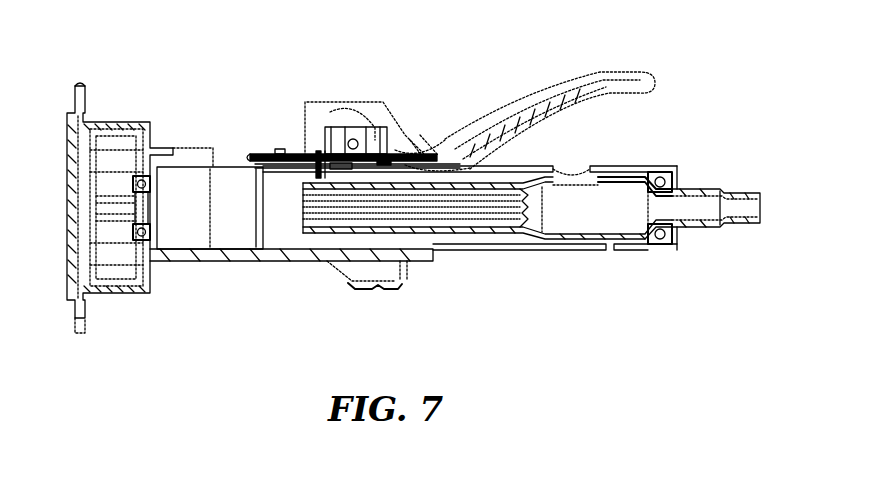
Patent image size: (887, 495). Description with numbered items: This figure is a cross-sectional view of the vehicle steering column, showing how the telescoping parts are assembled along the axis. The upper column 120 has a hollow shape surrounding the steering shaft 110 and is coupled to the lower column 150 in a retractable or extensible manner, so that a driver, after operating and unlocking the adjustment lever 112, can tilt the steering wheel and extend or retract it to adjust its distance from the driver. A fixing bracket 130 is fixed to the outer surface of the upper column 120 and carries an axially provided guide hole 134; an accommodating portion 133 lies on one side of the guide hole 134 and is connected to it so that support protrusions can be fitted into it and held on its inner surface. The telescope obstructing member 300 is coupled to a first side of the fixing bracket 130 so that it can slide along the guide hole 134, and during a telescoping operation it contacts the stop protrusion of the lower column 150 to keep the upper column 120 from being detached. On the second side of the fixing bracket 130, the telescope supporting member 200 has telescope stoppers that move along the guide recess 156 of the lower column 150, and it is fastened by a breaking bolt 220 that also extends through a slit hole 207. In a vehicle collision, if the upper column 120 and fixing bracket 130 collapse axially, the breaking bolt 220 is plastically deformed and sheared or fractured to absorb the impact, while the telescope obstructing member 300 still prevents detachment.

The steering shaft 110 is at (706, 229).
The adjustment lever 112 is at (618, 78).
The upper column 120 is at (482, 252).
The fixing bracket 130 is at (233, 150).
The accommodating portion 133 is at (408, 160).
The guide hole 134 is at (370, 133).
The lower column 150 is at (226, 256).
The guide recess 156 is at (211, 121).
The telescope supporting member 200 is at (272, 151).
The slit hole 207 is at (338, 168).
The breaking bolt 220 is at (318, 150).
The telescope obstructing member 300 is at (392, 154).